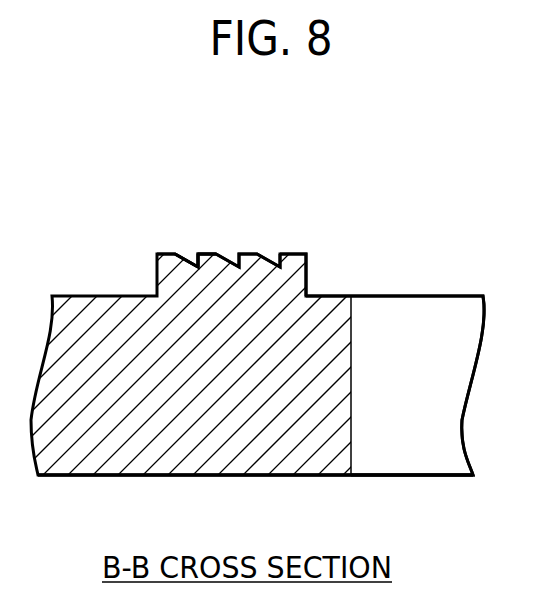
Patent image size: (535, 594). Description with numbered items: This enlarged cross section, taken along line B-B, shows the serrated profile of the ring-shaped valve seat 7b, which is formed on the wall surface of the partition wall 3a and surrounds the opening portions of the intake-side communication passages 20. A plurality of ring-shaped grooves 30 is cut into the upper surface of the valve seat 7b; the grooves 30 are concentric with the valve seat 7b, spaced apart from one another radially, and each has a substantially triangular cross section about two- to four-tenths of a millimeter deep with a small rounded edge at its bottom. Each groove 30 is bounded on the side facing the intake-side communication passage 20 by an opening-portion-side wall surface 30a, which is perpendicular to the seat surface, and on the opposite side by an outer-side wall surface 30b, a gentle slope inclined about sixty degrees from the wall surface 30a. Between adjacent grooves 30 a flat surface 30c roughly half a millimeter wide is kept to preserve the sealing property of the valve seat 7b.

The intake-side communication passage 20 is at (413, 297).
The valve seat 7b is at (297, 247).
The groove 30 is at (188, 260).
The opening-portion-side wall surface 30a is at (190, 262).
The outer-side wall surface 30b is at (187, 259).
The flat surface 30c is at (205, 254).
The partition wall 3a is at (133, 477).